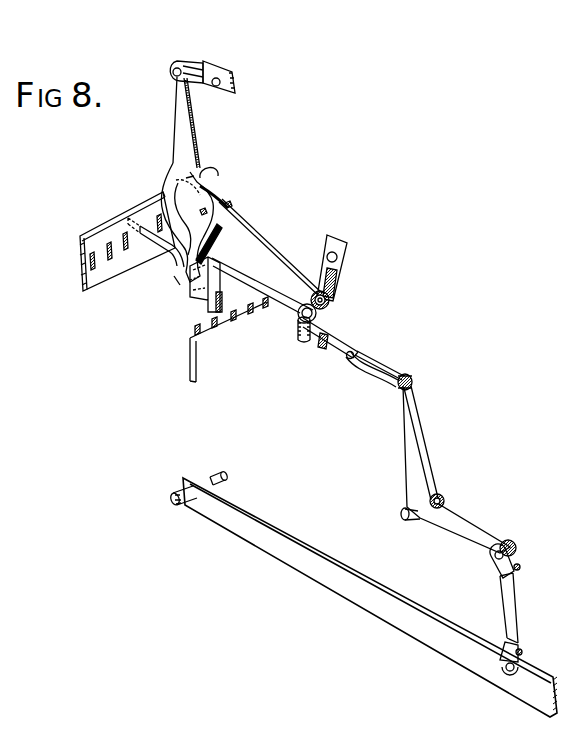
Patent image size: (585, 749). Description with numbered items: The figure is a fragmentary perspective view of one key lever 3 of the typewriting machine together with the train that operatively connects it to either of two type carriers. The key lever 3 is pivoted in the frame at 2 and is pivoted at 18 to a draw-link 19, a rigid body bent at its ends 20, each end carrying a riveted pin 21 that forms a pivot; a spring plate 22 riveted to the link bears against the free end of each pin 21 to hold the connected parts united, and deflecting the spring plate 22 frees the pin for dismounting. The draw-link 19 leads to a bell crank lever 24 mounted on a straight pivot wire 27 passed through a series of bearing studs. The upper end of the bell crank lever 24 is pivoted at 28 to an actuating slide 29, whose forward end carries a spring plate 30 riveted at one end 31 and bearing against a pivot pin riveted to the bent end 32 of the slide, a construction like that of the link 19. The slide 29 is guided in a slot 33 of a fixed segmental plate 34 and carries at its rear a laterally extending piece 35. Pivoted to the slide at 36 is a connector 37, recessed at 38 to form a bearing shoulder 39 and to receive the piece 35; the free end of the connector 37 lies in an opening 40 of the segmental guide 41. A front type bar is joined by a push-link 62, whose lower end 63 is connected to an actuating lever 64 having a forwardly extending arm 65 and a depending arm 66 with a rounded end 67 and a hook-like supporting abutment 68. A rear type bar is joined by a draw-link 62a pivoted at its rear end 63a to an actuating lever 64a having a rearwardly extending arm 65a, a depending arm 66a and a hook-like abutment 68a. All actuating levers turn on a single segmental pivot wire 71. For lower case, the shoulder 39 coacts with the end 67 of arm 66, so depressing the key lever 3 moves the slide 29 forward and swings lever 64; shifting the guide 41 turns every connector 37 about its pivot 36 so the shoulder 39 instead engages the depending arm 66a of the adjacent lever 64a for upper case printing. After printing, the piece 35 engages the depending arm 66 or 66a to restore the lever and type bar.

The pivot 2 is at (176, 506).
The key lever 3 is at (370, 597).
The pivot 18 is at (507, 672).
The draw-link 19 is at (511, 608).
The bent end 20 is at (503, 569).
The pin 21 is at (511, 547).
The spring plate 22 is at (519, 566).
The bell crank lever 24 is at (455, 530).
The pivot wire 27 is at (441, 500).
The pivot 28 is at (413, 384).
The actuating slide 29 is at (329, 343).
The spring plate 30 is at (370, 372).
The riveted end 31 is at (356, 357).
The bent end 32 is at (386, 373).
The slot 33 is at (258, 333).
The fixed segmental plate 34 is at (212, 371).
The laterally extending piece 35 is at (192, 283).
The pivot 36 is at (305, 338).
The connector 37 is at (235, 283).
The recess 38 is at (205, 286).
The bearing shoulder 39 is at (173, 280).
The opening 40 is at (108, 253).
The segmental guide 41 is at (79, 250).
The push-link 62 is at (341, 241).
The draw-link 62a is at (236, 75).
The lower end 63 is at (330, 299).
The rear end 63a is at (178, 64).
The actuating lever 64 is at (216, 195).
The actuating lever 64a is at (160, 198).
The forwardly extending arm 65 is at (258, 246).
The rearwardly extending arm 65a is at (182, 113).
The depending arm 66 is at (216, 246).
The depending arm 66a is at (173, 263).
The rounded end 67 is at (198, 258).
The hook-like supporting abutment 68 is at (210, 170).
The hook-like supporting abutment 68a is at (190, 178).
The segmental pivot wire 71 is at (231, 205).